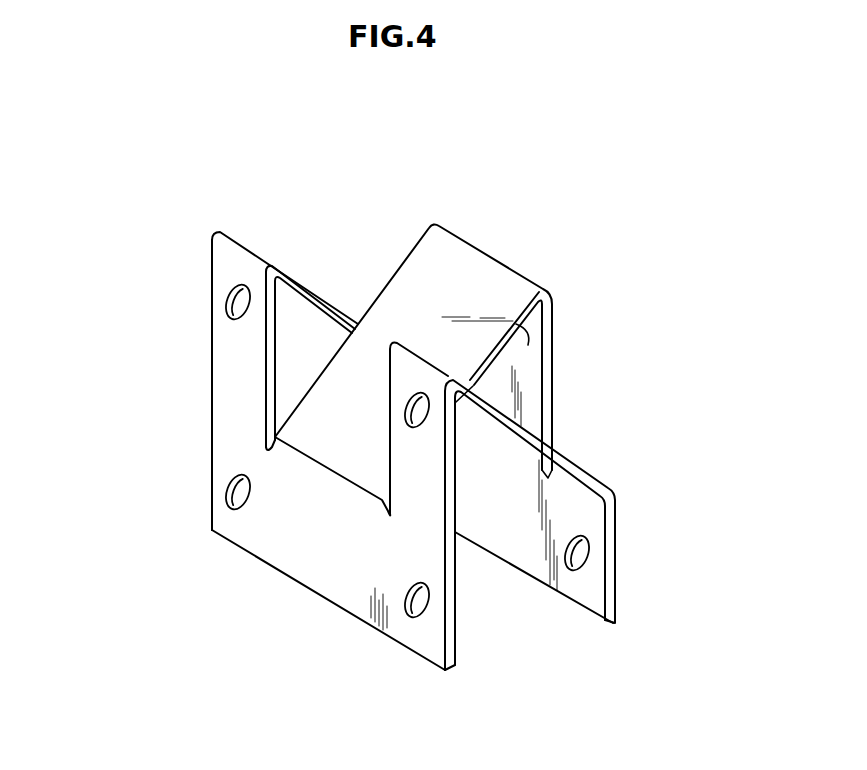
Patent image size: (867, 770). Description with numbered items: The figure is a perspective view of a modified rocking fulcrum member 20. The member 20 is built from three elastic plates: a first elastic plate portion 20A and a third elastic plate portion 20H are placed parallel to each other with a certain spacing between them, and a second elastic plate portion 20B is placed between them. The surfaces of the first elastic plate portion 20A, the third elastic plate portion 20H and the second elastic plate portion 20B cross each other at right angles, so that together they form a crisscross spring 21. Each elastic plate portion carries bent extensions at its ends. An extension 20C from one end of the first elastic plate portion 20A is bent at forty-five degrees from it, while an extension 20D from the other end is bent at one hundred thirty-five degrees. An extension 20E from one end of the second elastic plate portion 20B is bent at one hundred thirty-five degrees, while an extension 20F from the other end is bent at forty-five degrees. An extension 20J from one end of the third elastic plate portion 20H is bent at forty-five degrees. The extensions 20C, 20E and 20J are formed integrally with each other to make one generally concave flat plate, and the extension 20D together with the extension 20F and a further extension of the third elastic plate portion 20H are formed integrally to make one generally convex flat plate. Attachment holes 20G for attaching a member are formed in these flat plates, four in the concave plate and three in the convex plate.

The rocking fulcrum member 20 is at (594, 184).
The crisscross spring 21 is at (372, 228).
The first elastic plate portion 20A is at (562, 458).
The second elastic plate portion 20B is at (422, 237).
The extension 20C is at (435, 557).
The extension 20D is at (612, 562).
The extension 20E is at (307, 567).
The extension 20F is at (547, 368).
The attachment holes 20G is at (228, 300).
The third elastic plate portion 20H is at (325, 300).
The extension 20J is at (222, 405).